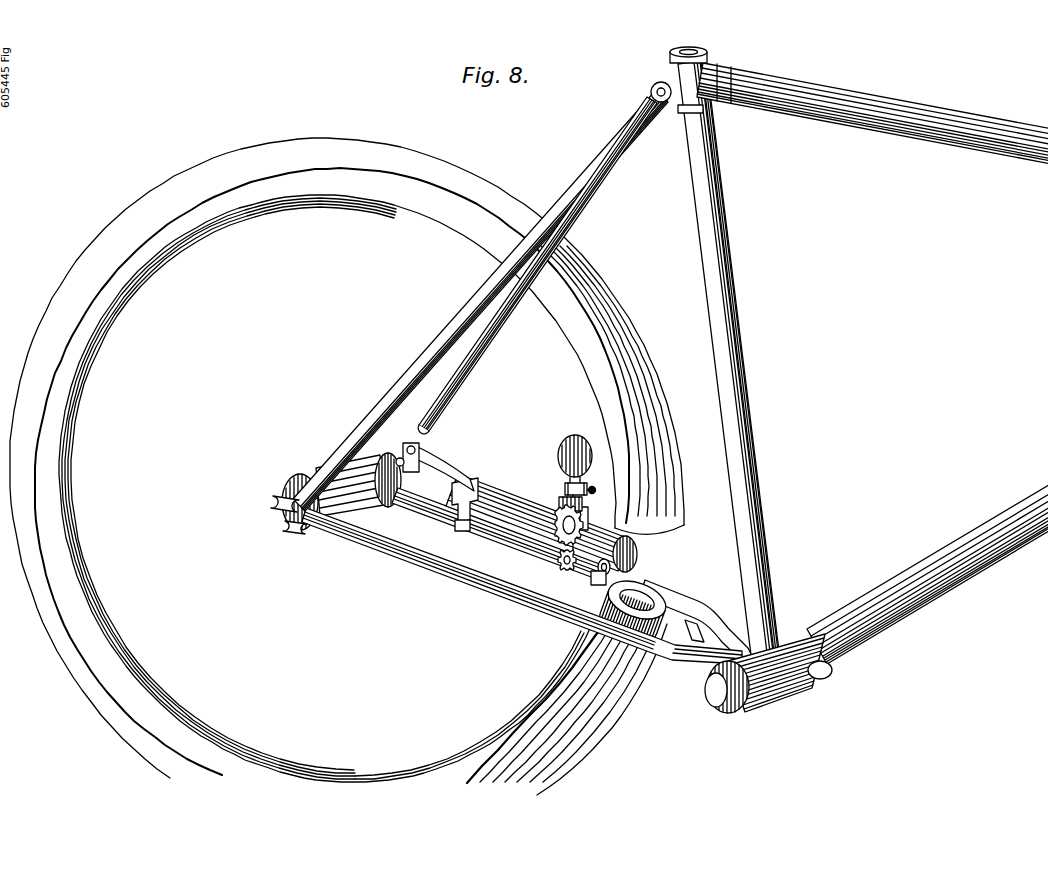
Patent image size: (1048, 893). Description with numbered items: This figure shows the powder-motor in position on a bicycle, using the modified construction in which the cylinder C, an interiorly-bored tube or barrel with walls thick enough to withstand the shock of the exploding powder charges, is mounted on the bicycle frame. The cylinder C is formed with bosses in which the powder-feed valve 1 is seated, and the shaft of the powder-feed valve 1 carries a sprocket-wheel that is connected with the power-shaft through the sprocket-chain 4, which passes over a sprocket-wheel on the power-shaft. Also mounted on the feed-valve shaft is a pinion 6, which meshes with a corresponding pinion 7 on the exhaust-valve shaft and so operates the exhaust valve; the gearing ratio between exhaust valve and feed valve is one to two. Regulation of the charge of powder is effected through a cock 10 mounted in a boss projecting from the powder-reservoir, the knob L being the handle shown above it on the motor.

The powder-feed valve 1 is at (460, 476).
The sprocket-chain 4 is at (407, 454).
The pinion 6 is at (583, 526).
The pinion 7 is at (565, 566).
The cock 10 is at (600, 486).
The cylinder C is at (524, 508).
The knob handle L is at (564, 452).